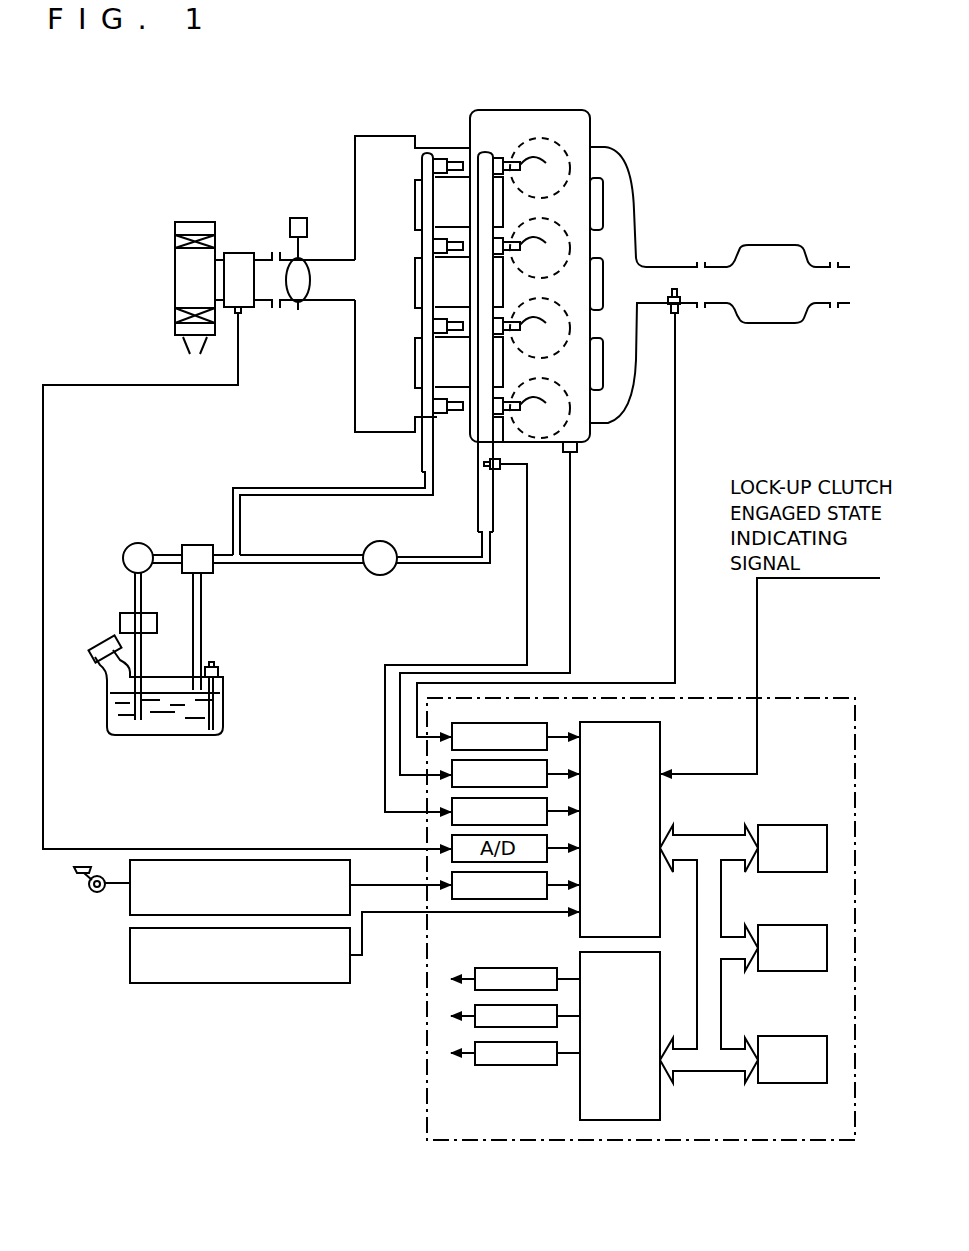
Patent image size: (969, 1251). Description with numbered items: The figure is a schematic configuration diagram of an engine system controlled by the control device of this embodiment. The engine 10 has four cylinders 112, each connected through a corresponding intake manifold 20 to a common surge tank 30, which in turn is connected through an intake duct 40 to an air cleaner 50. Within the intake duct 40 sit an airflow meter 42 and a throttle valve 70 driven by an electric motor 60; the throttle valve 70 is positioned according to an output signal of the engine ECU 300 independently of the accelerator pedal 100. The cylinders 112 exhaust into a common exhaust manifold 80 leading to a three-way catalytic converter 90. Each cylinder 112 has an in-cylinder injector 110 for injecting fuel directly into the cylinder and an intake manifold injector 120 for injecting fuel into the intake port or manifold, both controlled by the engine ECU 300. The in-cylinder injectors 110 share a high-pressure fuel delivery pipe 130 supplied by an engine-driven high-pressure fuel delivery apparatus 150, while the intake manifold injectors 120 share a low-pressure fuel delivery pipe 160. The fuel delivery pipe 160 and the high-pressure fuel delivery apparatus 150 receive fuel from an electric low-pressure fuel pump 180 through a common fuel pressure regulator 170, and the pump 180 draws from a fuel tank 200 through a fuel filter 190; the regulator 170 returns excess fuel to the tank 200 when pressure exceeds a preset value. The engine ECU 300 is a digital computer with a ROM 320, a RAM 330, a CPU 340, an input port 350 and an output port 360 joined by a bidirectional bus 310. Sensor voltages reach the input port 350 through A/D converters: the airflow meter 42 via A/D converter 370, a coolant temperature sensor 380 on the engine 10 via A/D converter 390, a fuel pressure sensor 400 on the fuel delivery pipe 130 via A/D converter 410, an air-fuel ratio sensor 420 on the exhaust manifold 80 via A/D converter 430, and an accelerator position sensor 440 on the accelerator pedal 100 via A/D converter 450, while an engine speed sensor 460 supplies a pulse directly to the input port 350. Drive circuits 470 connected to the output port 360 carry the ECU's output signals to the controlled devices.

The engine 10 is at (590, 108).
The intake manifold 20 is at (437, 153).
The surge tank 30 is at (370, 136).
The intake duct 40 is at (340, 260).
The airflow meter 42 is at (240, 253).
The air cleaner 50 is at (175, 280).
The electric motor 60 is at (298, 218).
The throttle valve 70 is at (302, 293).
The exhaust manifold 80 is at (632, 190).
The three-way catalytic converter 90 is at (770, 245).
The accelerator pedal 100 is at (80, 888).
The in-cylinder injector 110 is at (540, 288).
The cylinder 112 is at (592, 133).
The intake manifold injector 120 is at (434, 166).
The fuel delivery pipe 130 is at (490, 152).
The high-pressure fuel delivery apparatus 150 is at (376, 542).
The fuel delivery pipe 160 is at (423, 458).
The fuel pressure regulator 170 is at (198, 545).
The low-pressure fuel pump 180 is at (142, 543).
The fuel filter 190 is at (123, 616).
The fuel tank 200 is at (165, 737).
The engine ECU 300 is at (808, 685).
The bidirectional bus 310 is at (701, 830).
The ROM 320 is at (783, 825).
The RAM 330 is at (783, 925).
The CPU 340 is at (783, 1036).
The input port 350 is at (664, 748).
The output port 360 is at (660, 1112).
The A/D converter 370 is at (450, 849).
The coolant temperature sensor 380 is at (575, 452).
The A/D converter 390 is at (450, 775).
The fuel pressure sensor 400 is at (505, 470).
The A/D converter 410 is at (450, 812).
The air-fuel ratio sensor 420 is at (683, 312).
The A/D converter 430 is at (450, 737).
The accelerator position sensor 440 is at (130, 898).
The A/D converter 450 is at (450, 885).
The engine speed sensor 460 is at (130, 955).
The drive circuit 470 is at (470, 992).